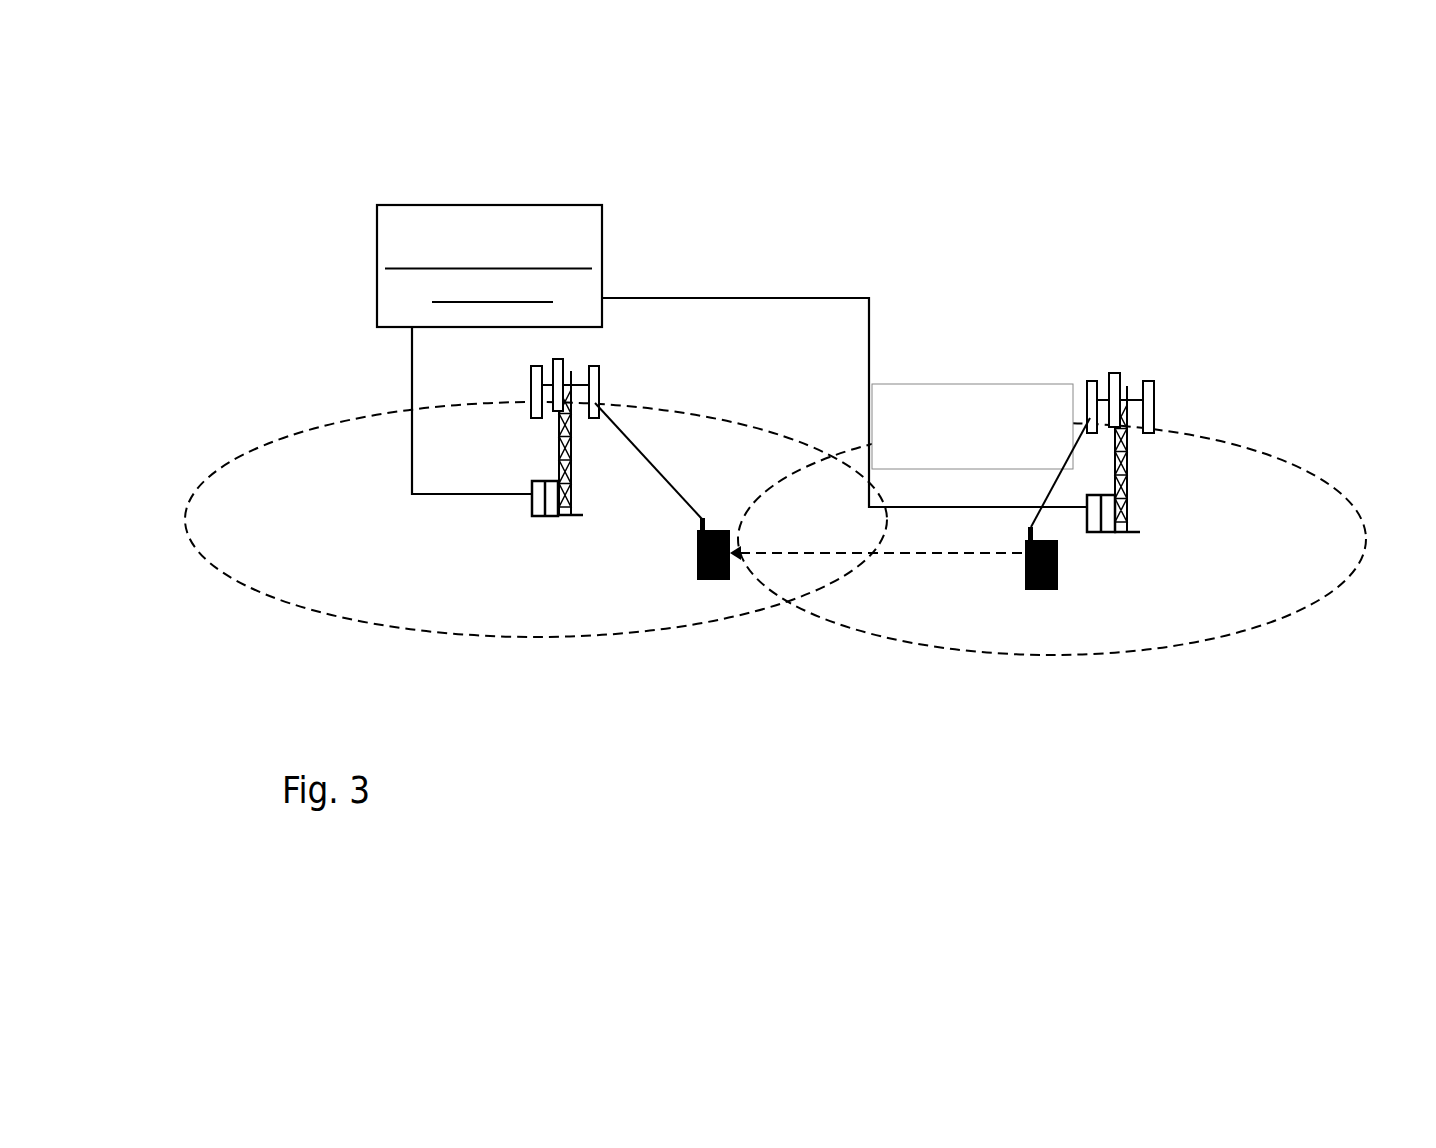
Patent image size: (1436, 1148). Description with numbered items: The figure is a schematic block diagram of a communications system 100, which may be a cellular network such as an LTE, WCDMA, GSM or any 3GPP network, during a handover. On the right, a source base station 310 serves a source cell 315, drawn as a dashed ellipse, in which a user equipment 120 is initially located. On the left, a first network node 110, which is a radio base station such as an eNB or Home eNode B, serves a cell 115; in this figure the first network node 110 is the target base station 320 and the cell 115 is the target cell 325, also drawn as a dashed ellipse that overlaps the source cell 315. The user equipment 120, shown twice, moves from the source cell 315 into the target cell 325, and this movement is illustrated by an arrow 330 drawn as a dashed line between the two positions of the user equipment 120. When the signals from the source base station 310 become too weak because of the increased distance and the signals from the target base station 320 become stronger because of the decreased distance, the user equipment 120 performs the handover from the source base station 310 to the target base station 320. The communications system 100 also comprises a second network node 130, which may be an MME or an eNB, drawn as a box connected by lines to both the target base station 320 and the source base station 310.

The communications system 100 is at (784, 508).
The first network node 110 is at (475, 476).
The cell 115 is at (708, 430).
The user equipment 120 is at (697, 547).
The second network node 130 is at (732, 356).
The source base station 310 is at (1087, 502).
The source cell 315 is at (1232, 433).
The target base station 320 is at (532, 502).
The target cell 325 is at (612, 405).
The arrow 330 is at (818, 553).